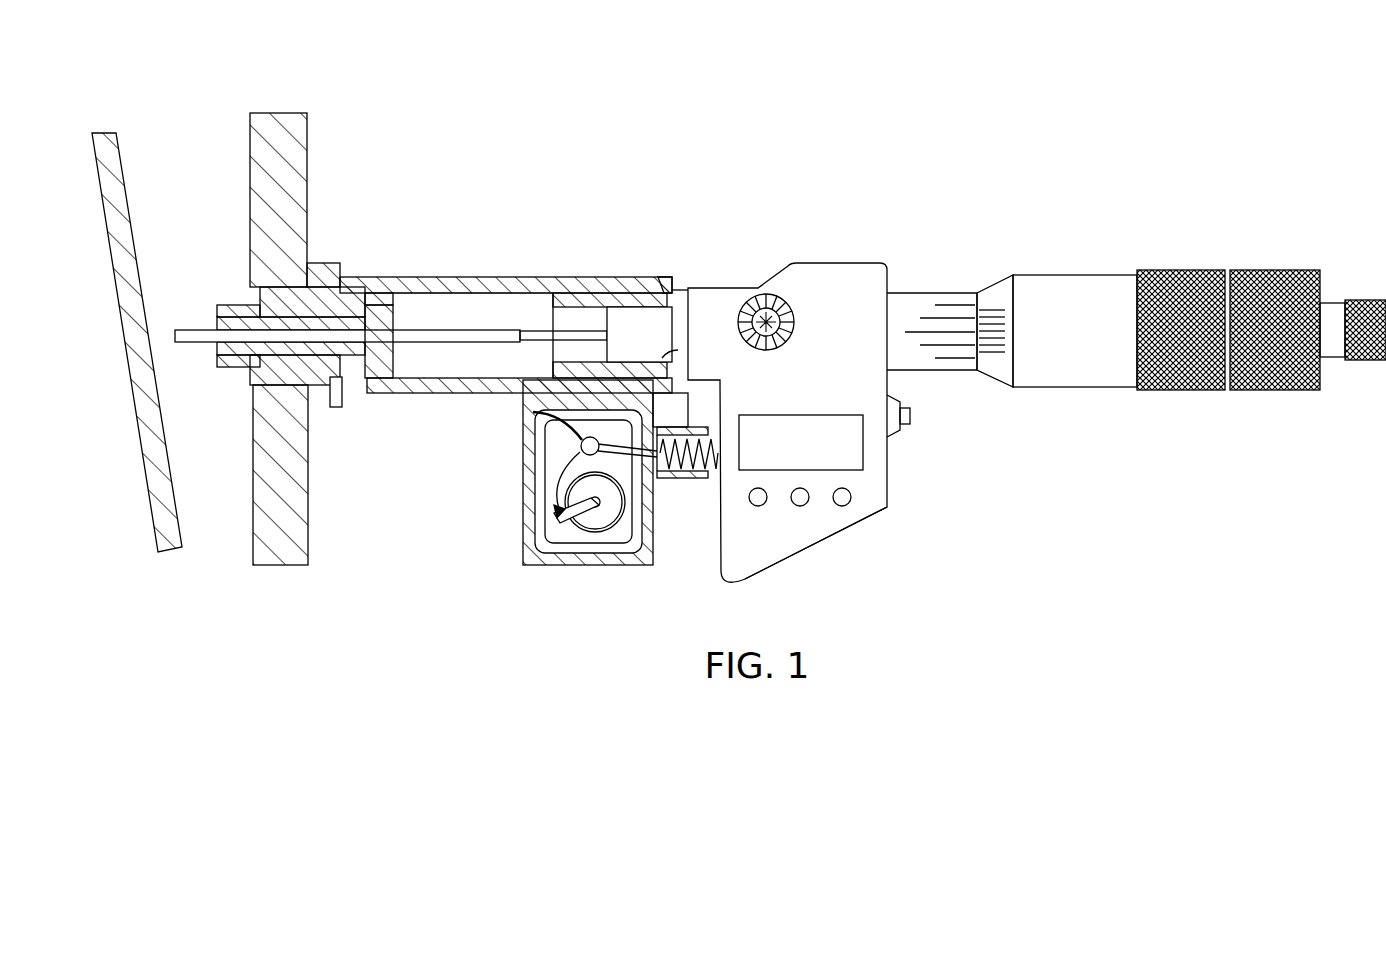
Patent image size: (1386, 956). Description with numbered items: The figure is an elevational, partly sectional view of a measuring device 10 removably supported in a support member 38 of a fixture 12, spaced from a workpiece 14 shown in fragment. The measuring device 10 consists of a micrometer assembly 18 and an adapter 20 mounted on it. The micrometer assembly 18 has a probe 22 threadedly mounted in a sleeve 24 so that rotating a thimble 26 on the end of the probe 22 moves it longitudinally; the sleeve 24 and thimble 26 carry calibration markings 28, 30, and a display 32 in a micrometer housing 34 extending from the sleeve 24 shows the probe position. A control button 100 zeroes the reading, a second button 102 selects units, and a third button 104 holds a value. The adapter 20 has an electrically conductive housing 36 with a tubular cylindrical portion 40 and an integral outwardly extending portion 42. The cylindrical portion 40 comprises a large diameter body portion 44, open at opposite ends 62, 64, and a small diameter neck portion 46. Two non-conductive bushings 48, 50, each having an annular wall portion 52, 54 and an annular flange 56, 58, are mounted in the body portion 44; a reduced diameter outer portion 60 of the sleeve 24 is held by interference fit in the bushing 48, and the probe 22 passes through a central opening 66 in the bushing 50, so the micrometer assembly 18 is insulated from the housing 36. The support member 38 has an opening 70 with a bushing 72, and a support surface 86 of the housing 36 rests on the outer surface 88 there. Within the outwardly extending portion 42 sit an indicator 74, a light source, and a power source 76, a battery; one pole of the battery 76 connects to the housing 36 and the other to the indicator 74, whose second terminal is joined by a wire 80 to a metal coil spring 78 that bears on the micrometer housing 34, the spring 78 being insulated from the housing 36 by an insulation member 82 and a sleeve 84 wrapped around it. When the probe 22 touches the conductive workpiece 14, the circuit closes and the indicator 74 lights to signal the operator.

The measuring device 10 is at (769, 204).
The fixture 12 is at (316, 100).
The workpiece 14 is at (170, 518).
The micrometer assembly 18 is at (990, 217).
The adapter 20 is at (543, 214).
The probe 22 is at (480, 331).
The sleeve 24 is at (684, 292).
The thimble 26 is at (1097, 375).
The calibration markings 28 is at (963, 360).
The calibration markings 30 is at (993, 358).
The display 32 is at (786, 456).
The micrometer housing 34 is at (880, 480).
The housing 36 is at (525, 510).
The support member 38 is at (298, 500).
The cylindrical portion 40 is at (478, 277).
The outwardly extending portion 42 is at (525, 497).
The body portion 44 is at (400, 277).
The neck portion 46 is at (233, 312).
The bushing 48 is at (610, 277).
The bushing 50 is at (255, 300).
The annular wall portion 52 is at (575, 277).
The annular wall portion 54 is at (218, 322).
The annular flange 56 is at (665, 277).
The annular flange 58 is at (385, 297).
The reduced diameter outer portion 60 is at (655, 341).
The open end 62 is at (678, 350).
The open end 64 is at (220, 350).
The central opening 66 is at (397, 340).
The opening 70 is at (262, 380).
The bushing 72 is at (335, 263).
The indicator 74 is at (581, 442).
The power source 76 is at (595, 522).
The coil spring 78 is at (706, 478).
The wire 80 is at (533, 412).
The insulation member 82 is at (655, 431).
The sleeve 84 is at (673, 480).
The support surface 86 is at (333, 407).
The outer surface 88 is at (350, 276).
The control button 100 is at (758, 506).
The second button 102 is at (803, 506).
The third button 104 is at (848, 504).